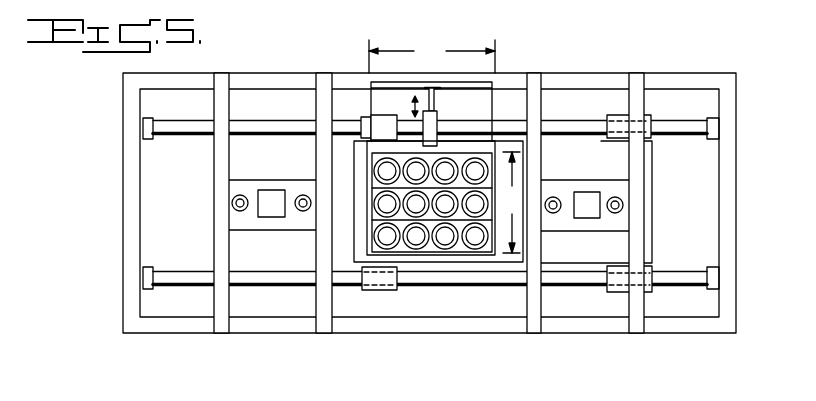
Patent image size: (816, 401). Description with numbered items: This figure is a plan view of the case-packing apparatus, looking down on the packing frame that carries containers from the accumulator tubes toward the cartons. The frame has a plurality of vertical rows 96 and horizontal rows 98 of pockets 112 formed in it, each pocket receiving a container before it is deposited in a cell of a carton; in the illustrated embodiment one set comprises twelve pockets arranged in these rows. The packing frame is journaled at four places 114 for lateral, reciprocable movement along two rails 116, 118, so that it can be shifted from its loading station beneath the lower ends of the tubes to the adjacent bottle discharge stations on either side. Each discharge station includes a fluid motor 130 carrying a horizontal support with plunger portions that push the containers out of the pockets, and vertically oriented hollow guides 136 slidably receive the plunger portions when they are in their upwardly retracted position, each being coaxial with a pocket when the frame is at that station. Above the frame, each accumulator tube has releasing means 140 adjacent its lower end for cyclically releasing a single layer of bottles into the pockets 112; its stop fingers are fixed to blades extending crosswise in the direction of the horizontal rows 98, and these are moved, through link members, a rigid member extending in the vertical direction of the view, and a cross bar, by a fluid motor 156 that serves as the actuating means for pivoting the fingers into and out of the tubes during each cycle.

The vertical rows 96 is at (510, 202).
The horizontal rows 98 is at (432, 56).
The pockets 112 is at (394, 240).
The journaled places 114 is at (380, 123).
The rail 116 is at (238, 120).
The rail 118 is at (270, 291).
The fluid motor 130 is at (273, 217).
The hollow guides 136 is at (232, 203).
The releasing means 140 is at (479, 98).
The fluid motor 156 is at (428, 136).